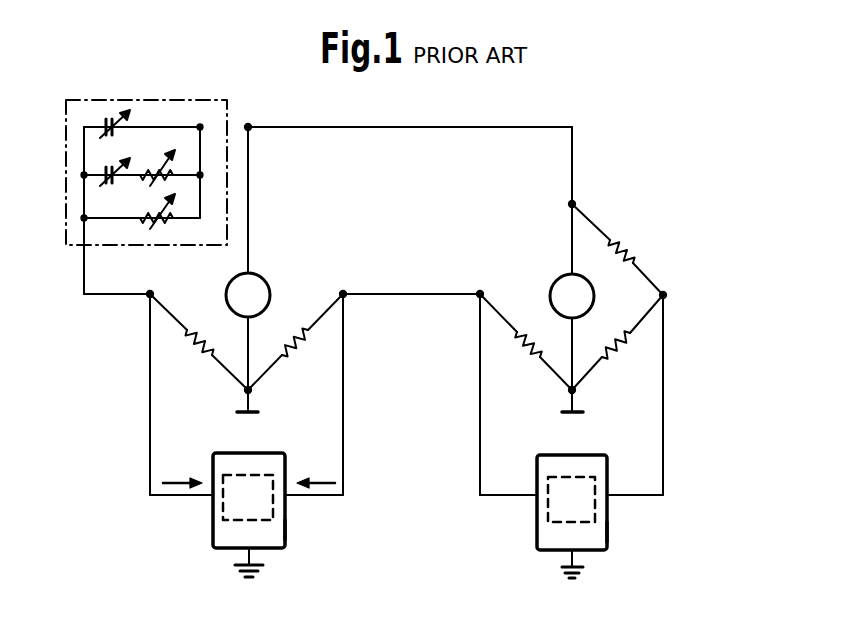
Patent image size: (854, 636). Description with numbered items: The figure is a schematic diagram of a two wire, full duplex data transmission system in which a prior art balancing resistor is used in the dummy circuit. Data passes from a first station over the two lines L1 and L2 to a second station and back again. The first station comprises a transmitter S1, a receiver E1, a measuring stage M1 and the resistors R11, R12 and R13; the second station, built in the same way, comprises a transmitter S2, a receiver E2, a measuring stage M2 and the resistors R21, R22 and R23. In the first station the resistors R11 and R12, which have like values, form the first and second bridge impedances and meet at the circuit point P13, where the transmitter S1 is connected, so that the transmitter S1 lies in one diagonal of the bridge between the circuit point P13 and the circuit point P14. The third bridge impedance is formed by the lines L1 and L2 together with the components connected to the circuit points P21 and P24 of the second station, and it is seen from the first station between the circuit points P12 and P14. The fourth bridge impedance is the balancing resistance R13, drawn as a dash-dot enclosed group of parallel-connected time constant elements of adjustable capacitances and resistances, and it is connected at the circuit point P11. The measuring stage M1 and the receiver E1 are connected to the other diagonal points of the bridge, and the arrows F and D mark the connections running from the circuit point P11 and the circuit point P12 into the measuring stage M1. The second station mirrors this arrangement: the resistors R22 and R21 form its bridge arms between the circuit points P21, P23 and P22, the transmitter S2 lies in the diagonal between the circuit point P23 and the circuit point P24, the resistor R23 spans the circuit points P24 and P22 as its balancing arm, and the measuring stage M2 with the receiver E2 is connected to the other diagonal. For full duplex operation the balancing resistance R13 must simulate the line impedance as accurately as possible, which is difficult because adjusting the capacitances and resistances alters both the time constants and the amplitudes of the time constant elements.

The balancing resistance R13 is at (148, 100).
The circuit point P14 is at (254, 114).
The line L1 is at (410, 112).
The circuit point P24 is at (554, 198).
The resistor R23 is at (630, 239).
The circuit point P22 is at (672, 279).
The circuit point P11 is at (154, 279).
The transmitter S1 is at (248, 295).
The circuit point P12 is at (342, 279).
The line L2 is at (411, 282).
The circuit point P21 is at (478, 282).
The transmitter S2 is at (572, 296).
The resistor R11 is at (192, 354).
The resistor R12 is at (306, 354).
The circuit point P13 is at (269, 392).
The resistor R22 is at (517, 355).
The resistor R21 is at (626, 354).
The circuit point P23 is at (590, 397).
The direction F is at (182, 470).
The direction D is at (316, 470).
The measuring stage M1 is at (249, 515).
The receiver E1 is at (296, 523).
The measuring stage M2 is at (572, 516).
The receiver E2 is at (617, 525).